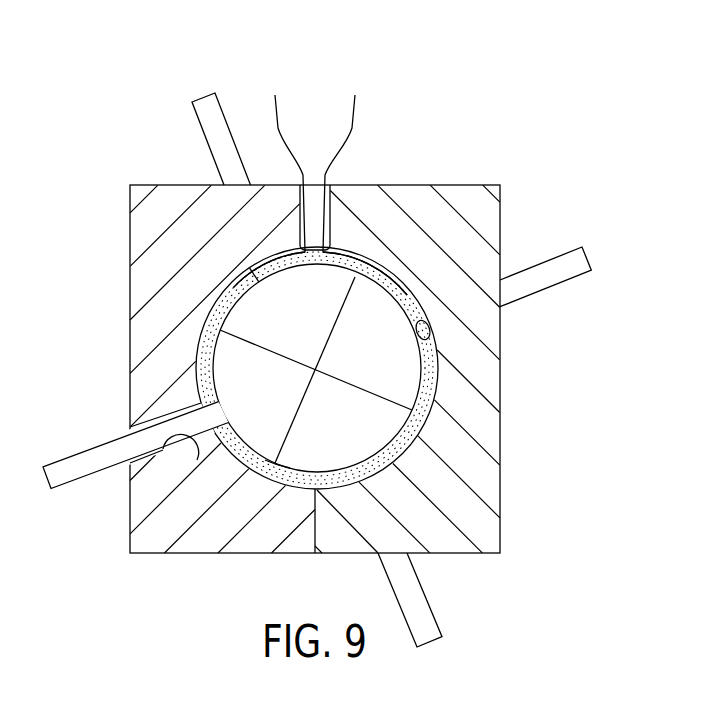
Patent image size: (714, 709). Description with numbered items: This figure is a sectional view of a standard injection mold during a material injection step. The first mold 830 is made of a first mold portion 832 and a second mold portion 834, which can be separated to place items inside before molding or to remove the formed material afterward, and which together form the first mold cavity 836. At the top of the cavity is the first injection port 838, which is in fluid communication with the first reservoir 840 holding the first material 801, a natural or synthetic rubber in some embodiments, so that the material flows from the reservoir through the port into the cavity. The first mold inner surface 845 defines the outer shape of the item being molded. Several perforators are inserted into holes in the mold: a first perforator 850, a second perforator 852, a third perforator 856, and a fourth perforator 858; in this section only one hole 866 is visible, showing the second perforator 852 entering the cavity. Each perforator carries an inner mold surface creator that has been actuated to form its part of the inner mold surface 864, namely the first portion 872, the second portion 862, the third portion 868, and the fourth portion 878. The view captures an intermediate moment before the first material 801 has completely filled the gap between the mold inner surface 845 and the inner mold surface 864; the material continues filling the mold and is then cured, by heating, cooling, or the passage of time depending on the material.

The first material 801 is at (341, 89).
The first mold 830 is at (307, 299).
The first mold portion 832 is at (464, 193).
The second mold portion 834 is at (147, 193).
The first mold cavity 836 is at (222, 282).
The first injection port 838 is at (333, 258).
The first reservoir 840 is at (336, 129).
The first mold inner surface 845 is at (430, 329).
The first perforator 850 is at (222, 105).
The second perforator 852 is at (148, 508).
The third perforator 856 is at (430, 613).
The fourth perforator 858 is at (578, 279).
The second portion of inner mold surface 862 is at (265, 460).
The inner mold surface 864 is at (213, 443).
The hole 866 is at (197, 460).
The third portion of inner mold surface 868 is at (420, 424).
The first portion of inner mold surface 872 is at (258, 297).
The fourth portion of inner mold surface 878 is at (387, 283).